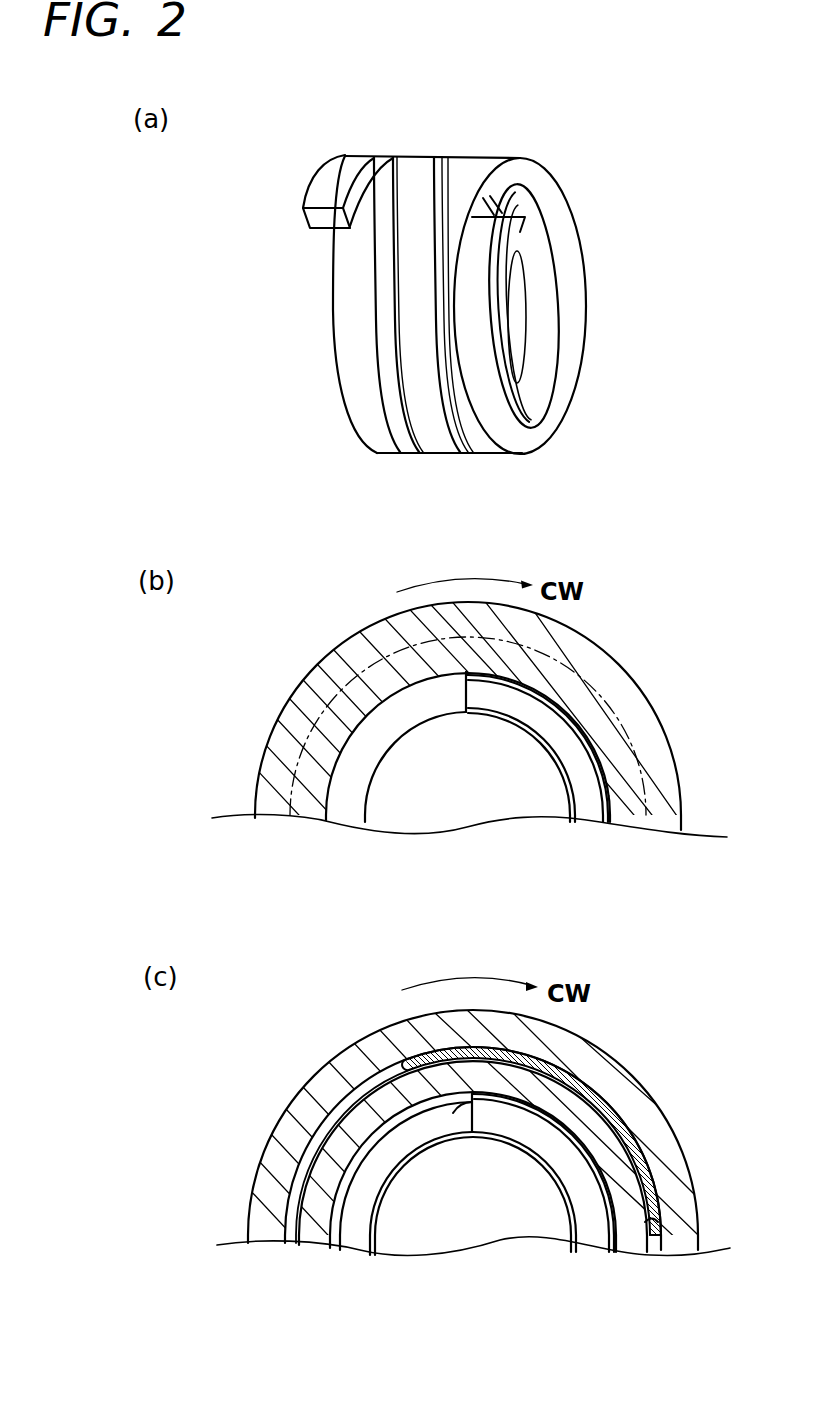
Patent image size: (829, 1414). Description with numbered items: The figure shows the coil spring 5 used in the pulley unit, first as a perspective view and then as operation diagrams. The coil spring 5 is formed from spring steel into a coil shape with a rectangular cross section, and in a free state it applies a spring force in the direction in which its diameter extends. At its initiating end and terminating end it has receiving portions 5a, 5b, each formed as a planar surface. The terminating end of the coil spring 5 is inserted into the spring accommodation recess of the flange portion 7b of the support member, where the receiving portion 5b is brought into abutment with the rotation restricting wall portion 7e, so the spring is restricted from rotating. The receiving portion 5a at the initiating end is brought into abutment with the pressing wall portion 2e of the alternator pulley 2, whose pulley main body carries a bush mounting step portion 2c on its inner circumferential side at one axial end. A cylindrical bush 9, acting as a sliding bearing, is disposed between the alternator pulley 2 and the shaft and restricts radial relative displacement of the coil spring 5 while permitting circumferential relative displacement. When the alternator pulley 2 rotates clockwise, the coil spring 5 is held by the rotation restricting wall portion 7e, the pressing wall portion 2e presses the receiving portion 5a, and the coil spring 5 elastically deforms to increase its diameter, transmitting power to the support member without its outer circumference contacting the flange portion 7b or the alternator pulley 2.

The alternator pulley 2 is at (630, 677).
The bush mounting step portion 2c is at (643, 1223).
The pressing wall portion 2e is at (496, 716).
The coil spring 5 is at (466, 146).
The receiving portion 5a is at (507, 201).
The receiving portion 5b is at (322, 218).
The flange portion 7b is at (320, 1197).
The rotation restricting wall portion 7e is at (453, 1113).
The bush 9 is at (680, 1142).